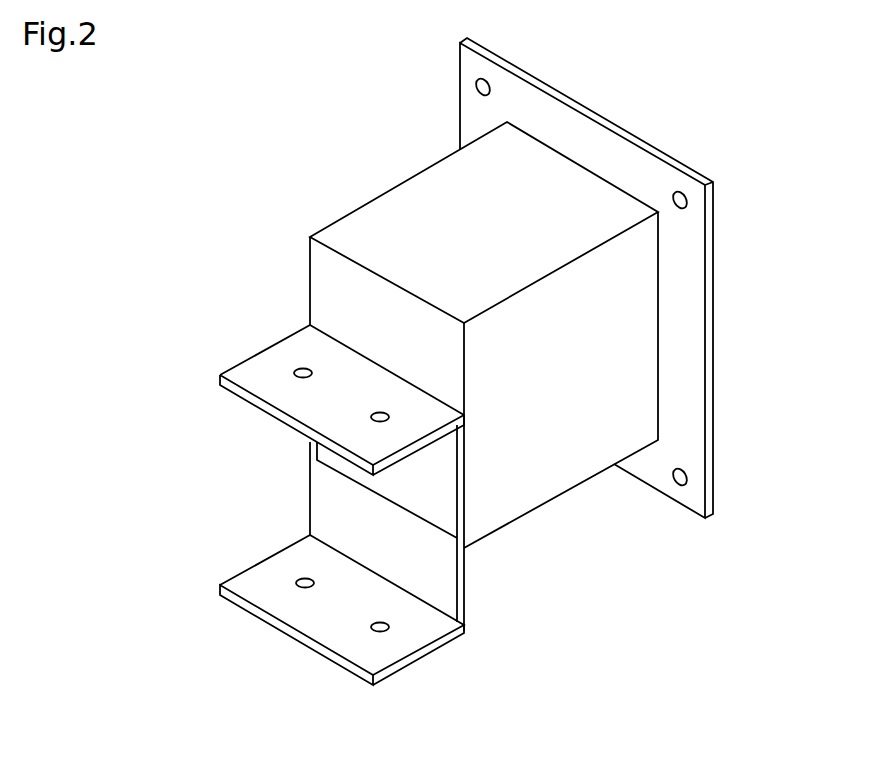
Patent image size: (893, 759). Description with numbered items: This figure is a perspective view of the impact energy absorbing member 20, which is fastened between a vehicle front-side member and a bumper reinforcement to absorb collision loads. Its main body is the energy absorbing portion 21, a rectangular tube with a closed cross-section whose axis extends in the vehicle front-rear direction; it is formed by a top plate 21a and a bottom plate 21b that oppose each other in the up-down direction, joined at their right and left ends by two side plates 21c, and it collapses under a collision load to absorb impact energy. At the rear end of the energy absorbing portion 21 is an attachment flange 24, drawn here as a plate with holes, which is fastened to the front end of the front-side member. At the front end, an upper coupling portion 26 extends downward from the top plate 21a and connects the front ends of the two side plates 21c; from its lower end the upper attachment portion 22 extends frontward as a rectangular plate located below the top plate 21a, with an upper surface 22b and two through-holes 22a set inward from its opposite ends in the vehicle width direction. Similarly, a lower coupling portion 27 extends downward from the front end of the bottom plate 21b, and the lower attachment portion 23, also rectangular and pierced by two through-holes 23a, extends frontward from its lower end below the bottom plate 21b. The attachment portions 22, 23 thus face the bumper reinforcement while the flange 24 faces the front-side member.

The impact energy absorbing member 20 is at (405, 178).
The energy absorbing portion 21 is at (348, 214).
The top plate 21a is at (527, 273).
The bottom plate 21b is at (442, 515).
The side plate 21c is at (562, 478).
The upper attachment portion 22 is at (260, 363).
The through-hole 22a is at (312, 373).
The upper surface 22b is at (382, 375).
The lower attachment portion 23 is at (257, 590).
The through-hole 23a is at (313, 584).
The attachment flange 24 is at (688, 357).
The upper coupling portion 26 is at (378, 295).
The lower coupling portion 27 is at (447, 578).